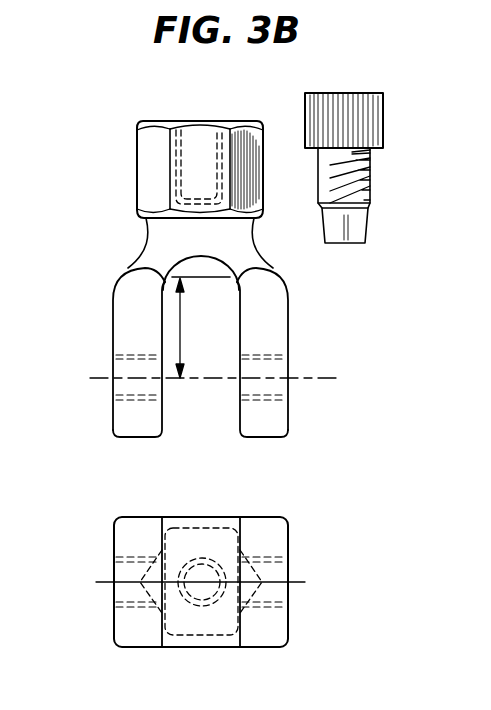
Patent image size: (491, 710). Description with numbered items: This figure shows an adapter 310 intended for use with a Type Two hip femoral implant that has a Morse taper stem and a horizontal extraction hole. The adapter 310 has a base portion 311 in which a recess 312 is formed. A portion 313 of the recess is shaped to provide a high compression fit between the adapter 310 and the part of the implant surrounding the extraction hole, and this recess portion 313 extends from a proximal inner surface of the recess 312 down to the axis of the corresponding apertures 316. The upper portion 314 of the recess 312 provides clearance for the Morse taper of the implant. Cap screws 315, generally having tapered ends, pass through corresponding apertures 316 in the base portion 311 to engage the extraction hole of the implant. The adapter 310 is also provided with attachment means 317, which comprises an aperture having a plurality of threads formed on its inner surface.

The adapter 310 is at (108, 180).
The base portion 311 is at (113, 338).
The recess 312 is at (204, 428).
The recess portion 313 is at (181, 340).
The upper portion of recess 314 is at (192, 268).
The cap screw 315 is at (385, 110).
The aperture 316 is at (293, 373).
The attachment means 317 is at (145, 147).